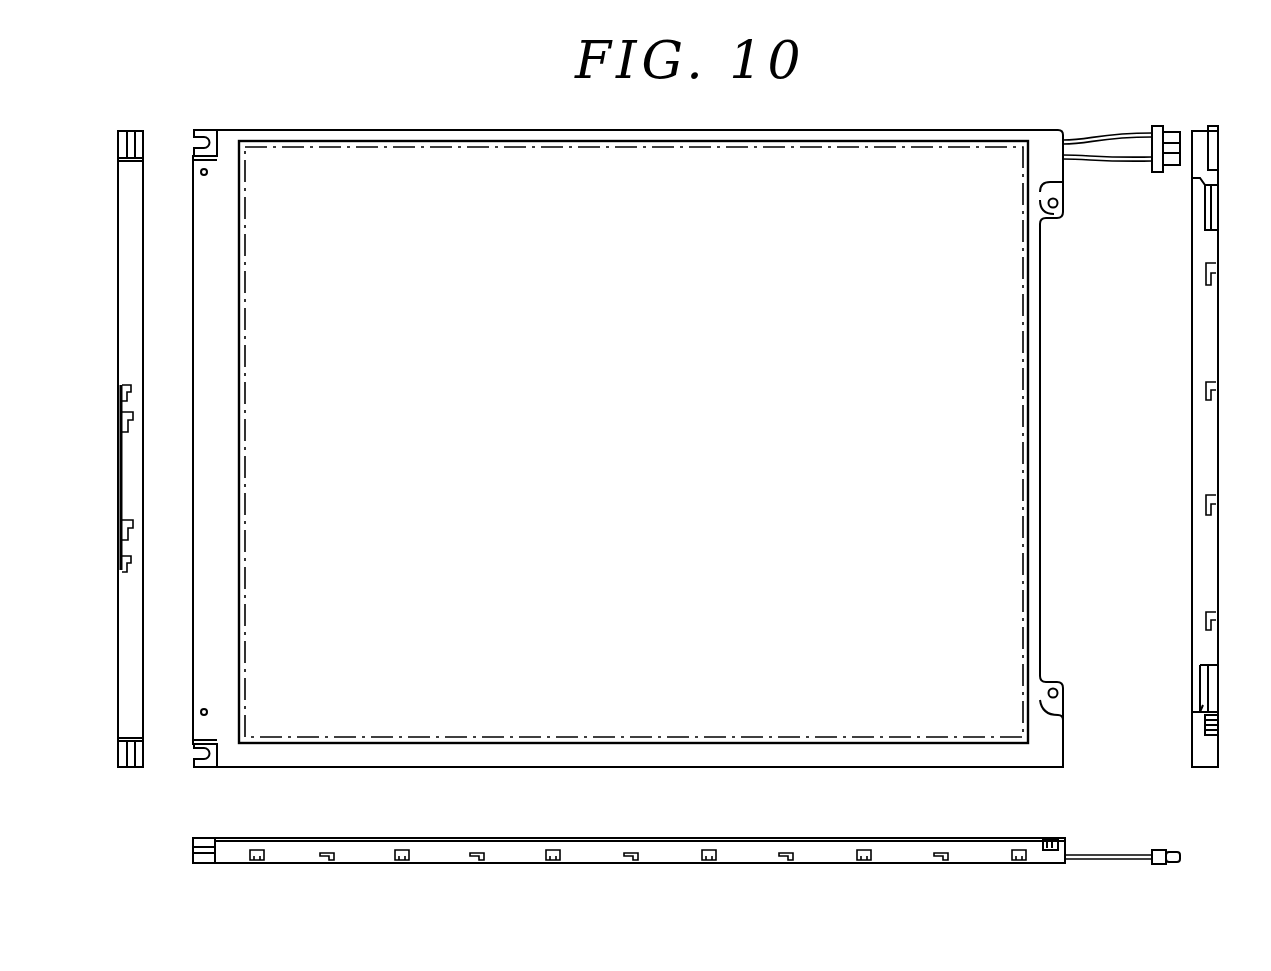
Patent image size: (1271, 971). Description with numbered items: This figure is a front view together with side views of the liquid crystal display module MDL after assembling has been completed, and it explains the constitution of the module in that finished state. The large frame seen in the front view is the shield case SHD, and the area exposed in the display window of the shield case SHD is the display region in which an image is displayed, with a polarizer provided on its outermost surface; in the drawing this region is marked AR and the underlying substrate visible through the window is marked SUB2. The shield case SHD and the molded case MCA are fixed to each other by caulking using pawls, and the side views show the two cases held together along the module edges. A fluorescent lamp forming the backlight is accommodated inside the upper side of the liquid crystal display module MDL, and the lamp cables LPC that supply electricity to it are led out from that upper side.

The liquid crystal display module MDL is at (666, 523).
The shield case SHD is at (133, 612).
The second substrate SUB2 is at (901, 141).
The display area AR is at (762, 147).
The molded case MCA is at (118, 472).
The lamp cables LPC is at (1088, 157).